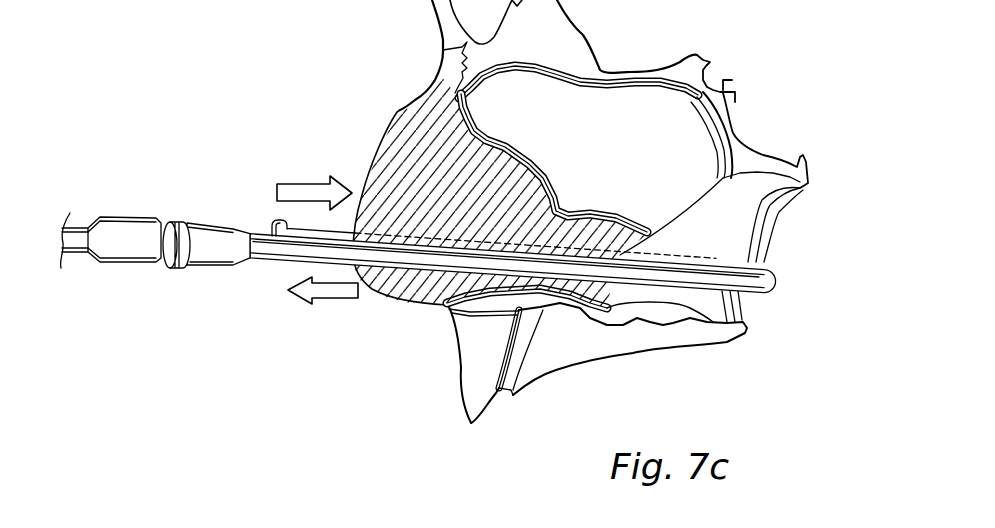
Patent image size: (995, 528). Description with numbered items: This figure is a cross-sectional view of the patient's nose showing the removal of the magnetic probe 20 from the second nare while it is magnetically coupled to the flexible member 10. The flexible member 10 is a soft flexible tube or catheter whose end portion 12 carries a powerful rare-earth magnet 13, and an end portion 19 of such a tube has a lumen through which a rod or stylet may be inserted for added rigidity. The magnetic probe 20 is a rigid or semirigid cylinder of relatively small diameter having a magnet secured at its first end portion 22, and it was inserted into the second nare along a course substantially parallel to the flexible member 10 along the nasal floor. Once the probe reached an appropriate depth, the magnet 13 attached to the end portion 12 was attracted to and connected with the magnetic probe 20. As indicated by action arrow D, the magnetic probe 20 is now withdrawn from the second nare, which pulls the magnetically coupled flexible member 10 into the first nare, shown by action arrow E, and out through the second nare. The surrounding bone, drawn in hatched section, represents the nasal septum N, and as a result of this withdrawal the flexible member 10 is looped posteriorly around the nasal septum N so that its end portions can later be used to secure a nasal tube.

The flexible member 10 is at (279, 219).
The end portion 12 is at (228, 243).
The rare-earth magnet 13 is at (188, 242).
The end portion 19 is at (177, 244).
The magnetic probe 20 is at (72, 242).
The first end portion 22 is at (88, 255).
The nasal septum N is at (415, 173).
The action arrow E is at (313, 190).
The action arrow D is at (318, 303).